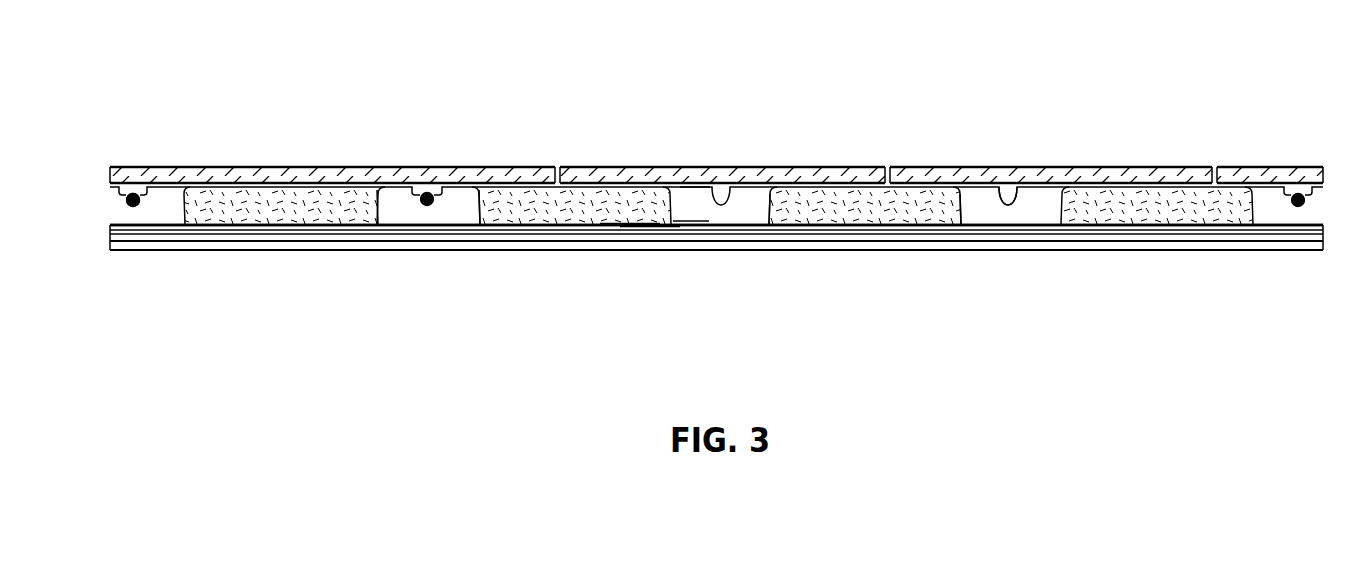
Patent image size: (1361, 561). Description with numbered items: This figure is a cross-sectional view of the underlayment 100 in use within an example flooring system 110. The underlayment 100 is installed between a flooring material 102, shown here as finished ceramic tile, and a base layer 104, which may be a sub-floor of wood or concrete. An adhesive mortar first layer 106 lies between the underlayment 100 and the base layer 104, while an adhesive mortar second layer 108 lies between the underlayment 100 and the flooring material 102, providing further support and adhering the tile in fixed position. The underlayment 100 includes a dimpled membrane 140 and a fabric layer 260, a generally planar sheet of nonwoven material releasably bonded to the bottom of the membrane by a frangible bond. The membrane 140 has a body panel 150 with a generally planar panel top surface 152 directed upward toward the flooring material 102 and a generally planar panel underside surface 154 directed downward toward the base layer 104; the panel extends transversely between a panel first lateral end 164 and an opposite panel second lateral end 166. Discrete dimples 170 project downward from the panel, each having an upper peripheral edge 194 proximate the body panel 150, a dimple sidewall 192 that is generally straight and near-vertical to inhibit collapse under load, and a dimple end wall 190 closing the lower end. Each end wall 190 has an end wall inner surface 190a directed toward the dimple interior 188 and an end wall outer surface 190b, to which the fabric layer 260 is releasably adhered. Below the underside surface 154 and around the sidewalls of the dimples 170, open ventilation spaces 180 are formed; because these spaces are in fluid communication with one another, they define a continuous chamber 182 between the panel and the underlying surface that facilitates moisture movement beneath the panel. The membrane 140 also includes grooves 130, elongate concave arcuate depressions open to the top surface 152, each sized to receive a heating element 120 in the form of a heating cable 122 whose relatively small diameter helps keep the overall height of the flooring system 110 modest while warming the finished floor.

The underlayment 100 is at (482, 200).
The flooring material 102 is at (594, 167).
The base layer 104 is at (553, 246).
The adhesive mortar first layer 106 is at (620, 240).
The adhesive mortar second layer 108 is at (932, 200).
The flooring system 110 is at (995, 120).
The heating element 120 is at (156, 210).
The heating cable 122 is at (133, 192).
The groove 130 is at (1011, 214).
The dimpled membrane 140 is at (185, 201).
The body panel 150 is at (752, 190).
The panel top surface 152 is at (692, 176).
The panel underside surface 154 is at (742, 208).
The panel first lateral end 164 is at (122, 282).
The panel second lateral end 166 is at (1307, 135).
The dimple 170 is at (1158, 193).
The open ventilation space 180 is at (452, 212).
The continuous chamber 182 is at (691, 210).
The dimple interior 188 is at (527, 212).
The dimple end wall 190 is at (610, 222).
The end wall inner surface 190a is at (640, 205).
The end wall outer surface 190b is at (652, 244).
The dimple sidewall 192 is at (1025, 228).
The upper peripheral edge 194 is at (1082, 194).
The fabric layer 260 is at (392, 224).